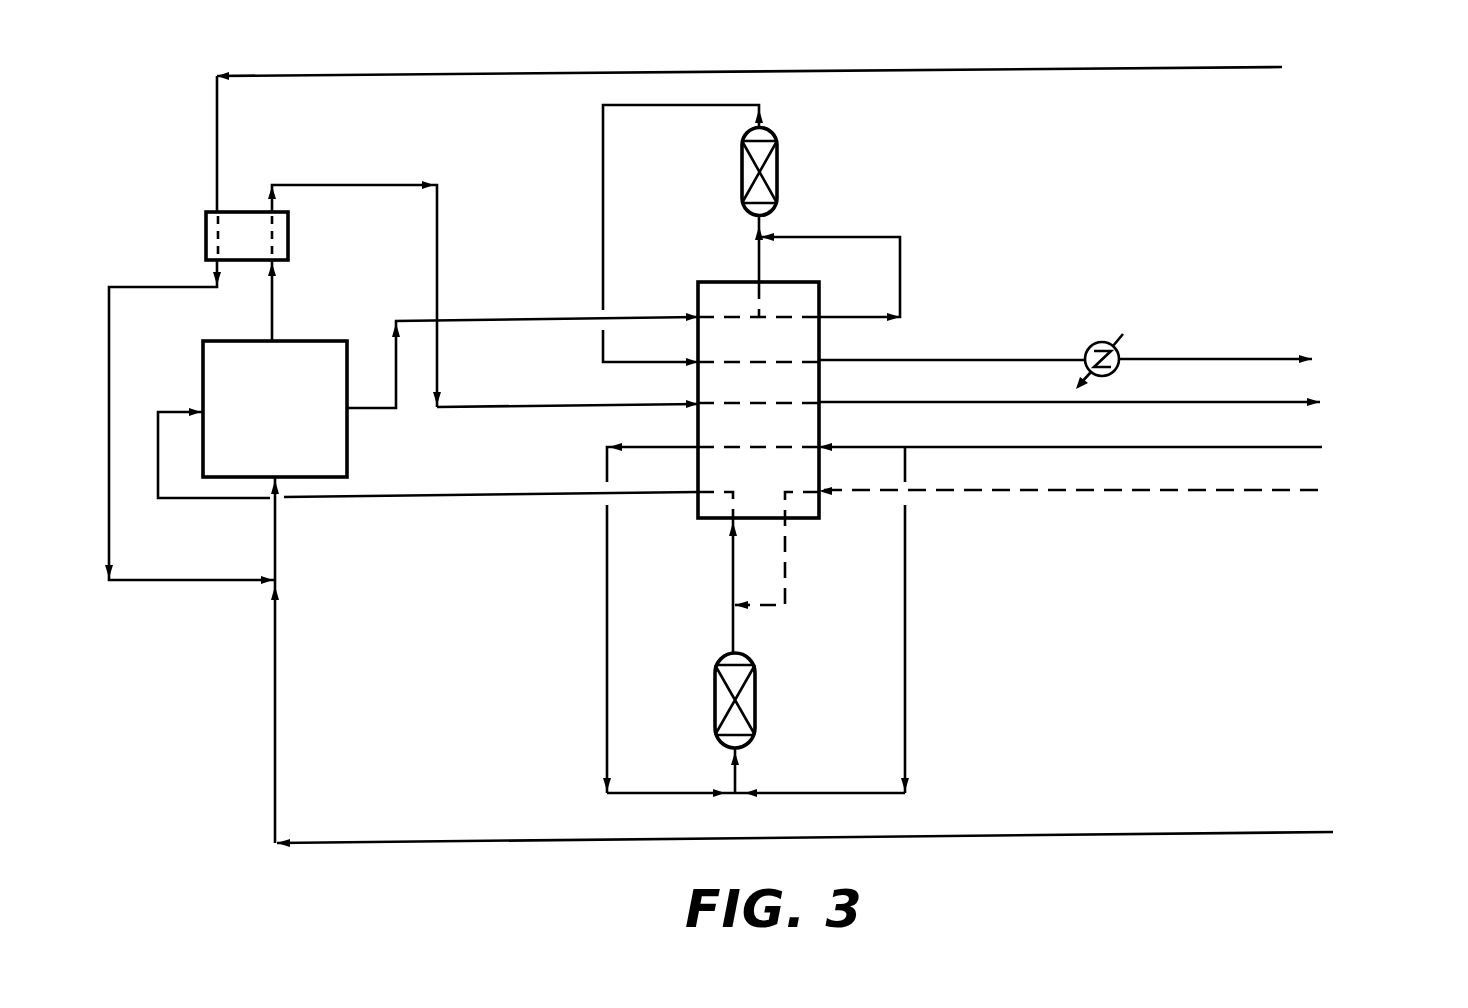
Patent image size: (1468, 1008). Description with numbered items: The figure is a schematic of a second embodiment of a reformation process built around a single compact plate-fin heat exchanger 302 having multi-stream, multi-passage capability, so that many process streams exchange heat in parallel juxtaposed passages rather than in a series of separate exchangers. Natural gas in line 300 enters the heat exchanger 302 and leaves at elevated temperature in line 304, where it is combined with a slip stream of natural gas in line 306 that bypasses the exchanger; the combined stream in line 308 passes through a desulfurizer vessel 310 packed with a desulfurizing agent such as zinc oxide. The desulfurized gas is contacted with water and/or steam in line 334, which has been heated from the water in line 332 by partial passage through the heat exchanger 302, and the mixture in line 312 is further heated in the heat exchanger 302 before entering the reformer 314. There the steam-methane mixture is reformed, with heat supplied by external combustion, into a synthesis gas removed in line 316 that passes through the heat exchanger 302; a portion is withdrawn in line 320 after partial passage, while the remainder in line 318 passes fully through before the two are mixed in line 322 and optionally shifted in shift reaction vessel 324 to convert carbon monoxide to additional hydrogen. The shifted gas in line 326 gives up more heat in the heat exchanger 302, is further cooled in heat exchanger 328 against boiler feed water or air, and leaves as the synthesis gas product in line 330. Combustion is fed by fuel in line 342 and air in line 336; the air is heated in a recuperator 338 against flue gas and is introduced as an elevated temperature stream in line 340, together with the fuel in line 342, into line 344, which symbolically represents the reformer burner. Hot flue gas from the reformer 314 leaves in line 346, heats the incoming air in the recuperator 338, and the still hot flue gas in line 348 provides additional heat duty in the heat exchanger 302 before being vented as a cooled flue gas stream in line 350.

The natural gas line 300 is at (1248, 448).
The compact plate-fin heat exchanger 302 is at (740, 432).
The heated natural gas line 304 is at (598, 573).
The natural gas slip stream line 306 is at (911, 574).
The combined natural gas line 308 is at (730, 778).
The desulfurizer vessel 310 is at (757, 703).
The natural gas and steam mixture line 312 is at (730, 564).
The reformer 314 is at (254, 459).
The synthesis gas line 316 is at (378, 410).
The synthesis gas remainder line 318 is at (901, 263).
The partial synthesis gas line 320 is at (755, 268).
The mixed synthesis gas line 322 is at (766, 230).
The shift reaction vessel 324 is at (777, 177).
The shifted synthesis gas line 326 is at (594, 164).
The heat exchanger 328 is at (1083, 341).
The synthesis gas product line 330 is at (1258, 345).
The water line 332 is at (1245, 491).
The water and/or steam line 334 is at (787, 574).
The air line 336 is at (1200, 70).
The recuperator 338 is at (206, 246).
The heated air line 340 is at (110, 330).
The fuel line 342 is at (1241, 832).
The reformer burner line 344 is at (280, 549).
The hot flue gas line 346 is at (274, 289).
The flue gas line 348 is at (357, 185).
The cooled flue gas vent line 350 is at (1245, 403).